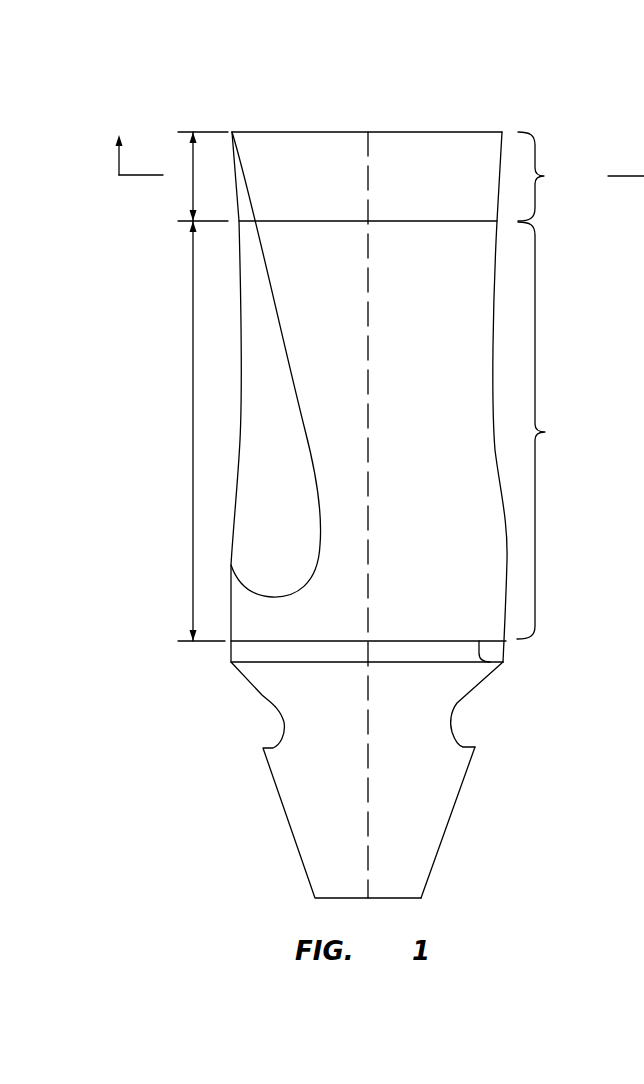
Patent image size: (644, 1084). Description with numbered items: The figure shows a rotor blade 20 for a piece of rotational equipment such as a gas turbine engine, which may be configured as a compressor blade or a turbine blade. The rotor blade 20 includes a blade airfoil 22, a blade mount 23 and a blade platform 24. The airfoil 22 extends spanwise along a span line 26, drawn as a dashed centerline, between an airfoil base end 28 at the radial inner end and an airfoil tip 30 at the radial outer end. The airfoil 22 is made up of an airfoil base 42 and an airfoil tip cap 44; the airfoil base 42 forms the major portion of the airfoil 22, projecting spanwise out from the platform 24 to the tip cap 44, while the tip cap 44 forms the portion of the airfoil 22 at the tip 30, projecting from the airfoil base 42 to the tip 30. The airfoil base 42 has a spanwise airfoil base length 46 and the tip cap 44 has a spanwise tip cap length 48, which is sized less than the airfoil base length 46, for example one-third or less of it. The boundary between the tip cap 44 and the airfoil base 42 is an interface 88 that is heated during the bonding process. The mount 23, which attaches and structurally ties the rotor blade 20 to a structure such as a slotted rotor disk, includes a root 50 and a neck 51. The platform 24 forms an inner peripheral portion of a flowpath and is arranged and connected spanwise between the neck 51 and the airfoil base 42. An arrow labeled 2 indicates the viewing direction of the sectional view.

The rotor blade 20 is at (230, 108).
The blade airfoil 22 is at (150, 404).
The blade mount 23 is at (247, 792).
The blade platform 24 is at (214, 662).
The span line 26 is at (370, 463).
The airfoil base end 28 is at (497, 664).
The airfoil tip 30 is at (478, 132).
The airfoil base 42 is at (553, 430).
The airfoil tip cap 44 is at (553, 176).
The airfoil base length 46 is at (201, 431).
The tip cap length 48 is at (193, 185).
The root 50 is at (450, 817).
The neck 51 is at (455, 729).
The interface 88 is at (450, 230).
The view direction of FIG. 2 is at (137, 136).